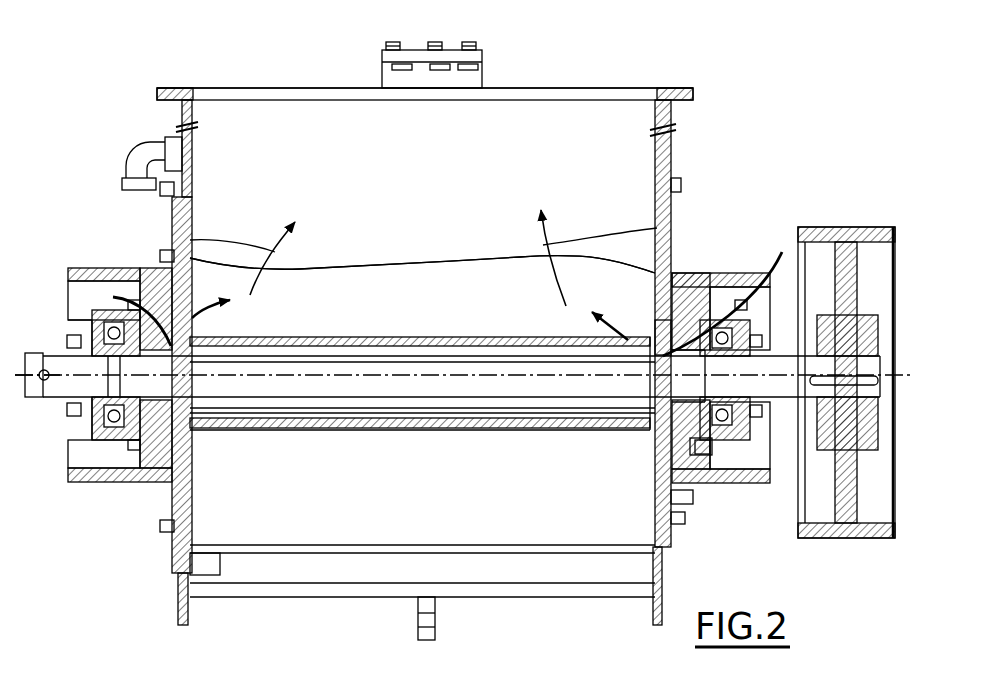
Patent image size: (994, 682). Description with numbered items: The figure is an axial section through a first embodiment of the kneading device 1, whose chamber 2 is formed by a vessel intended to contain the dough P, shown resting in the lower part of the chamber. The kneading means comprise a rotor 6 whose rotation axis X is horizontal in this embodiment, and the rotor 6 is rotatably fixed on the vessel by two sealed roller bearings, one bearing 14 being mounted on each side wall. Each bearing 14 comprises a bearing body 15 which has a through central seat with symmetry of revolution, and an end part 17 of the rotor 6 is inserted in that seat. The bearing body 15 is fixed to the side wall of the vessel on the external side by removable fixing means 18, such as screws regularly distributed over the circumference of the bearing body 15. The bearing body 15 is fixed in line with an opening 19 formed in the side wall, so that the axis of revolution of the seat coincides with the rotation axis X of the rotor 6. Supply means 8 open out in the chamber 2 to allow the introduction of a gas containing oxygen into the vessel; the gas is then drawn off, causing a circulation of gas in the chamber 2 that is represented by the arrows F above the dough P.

The kneading device 1 is at (560, 84).
The chamber 2 is at (437, 189).
The rotor 6 is at (393, 392).
The supply means 8 is at (108, 318).
The bearing 14 is at (85, 293).
The bearing body 15 is at (655, 325).
The end part of the rotor 17 is at (783, 388).
The removable fixing means 18 is at (716, 450).
The opening 19 is at (650, 400).
The dough P is at (430, 309).
The arrows representing gas circulation F is at (190, 257).
The rotation axis X is at (62, 385).